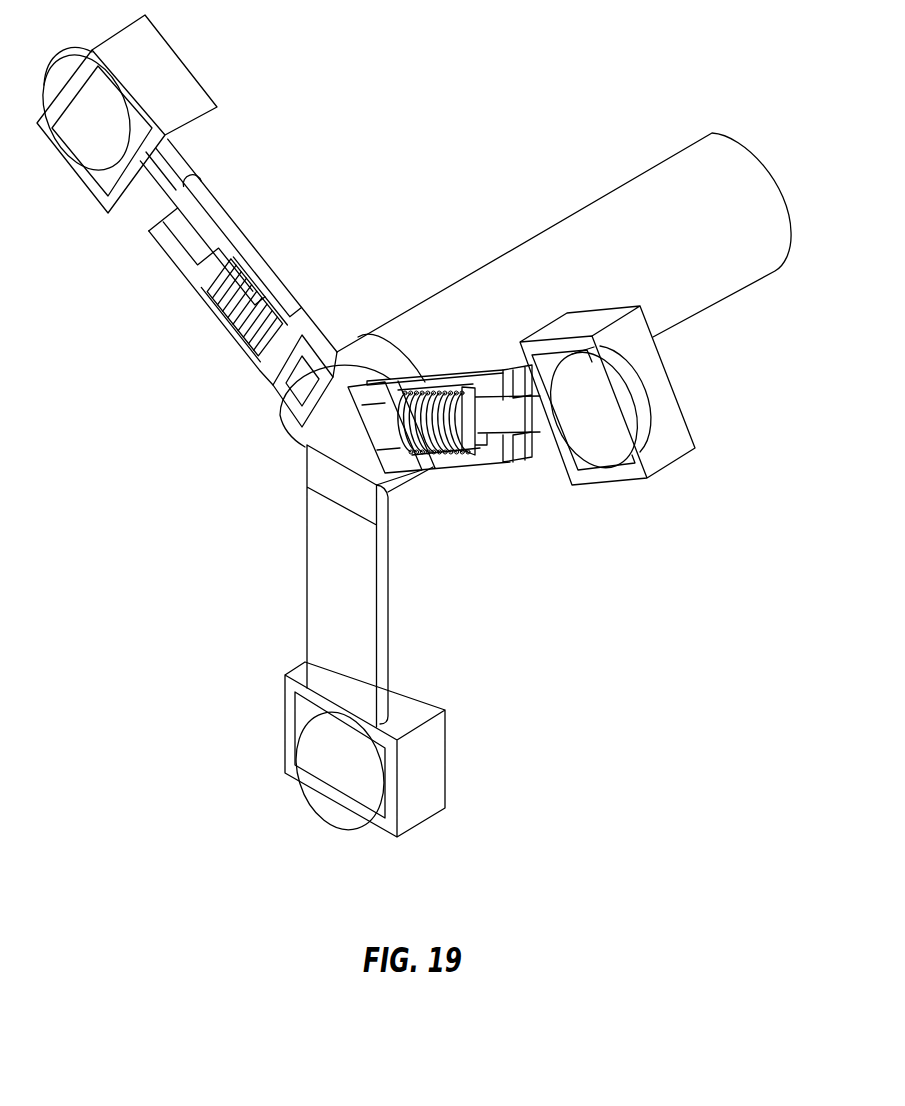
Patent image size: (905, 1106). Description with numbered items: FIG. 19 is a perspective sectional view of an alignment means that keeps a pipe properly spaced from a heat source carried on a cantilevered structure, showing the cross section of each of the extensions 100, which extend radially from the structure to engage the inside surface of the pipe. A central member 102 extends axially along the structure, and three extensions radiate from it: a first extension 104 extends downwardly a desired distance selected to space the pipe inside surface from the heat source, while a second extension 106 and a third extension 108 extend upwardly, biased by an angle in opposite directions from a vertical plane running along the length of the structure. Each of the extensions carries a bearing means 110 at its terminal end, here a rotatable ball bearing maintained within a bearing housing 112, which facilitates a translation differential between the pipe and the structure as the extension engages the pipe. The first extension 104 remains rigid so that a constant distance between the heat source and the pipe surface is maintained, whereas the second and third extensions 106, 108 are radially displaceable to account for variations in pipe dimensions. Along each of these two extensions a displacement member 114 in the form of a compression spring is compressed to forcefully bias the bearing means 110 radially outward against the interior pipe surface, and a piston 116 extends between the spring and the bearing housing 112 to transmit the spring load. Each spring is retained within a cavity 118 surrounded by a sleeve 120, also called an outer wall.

The extensions 100 is at (190, 384).
The central member 102 is at (714, 303).
The first extension 104 is at (306, 575).
The second extension 106 is at (230, 216).
The third extension 108 is at (440, 378).
The bearing means 110 is at (635, 410).
The bearing housing 112 is at (676, 466).
The displacement member 114 is at (228, 326).
The piston 116 is at (540, 447).
The cavity 118 is at (180, 258).
The sleeve 120 is at (267, 264).